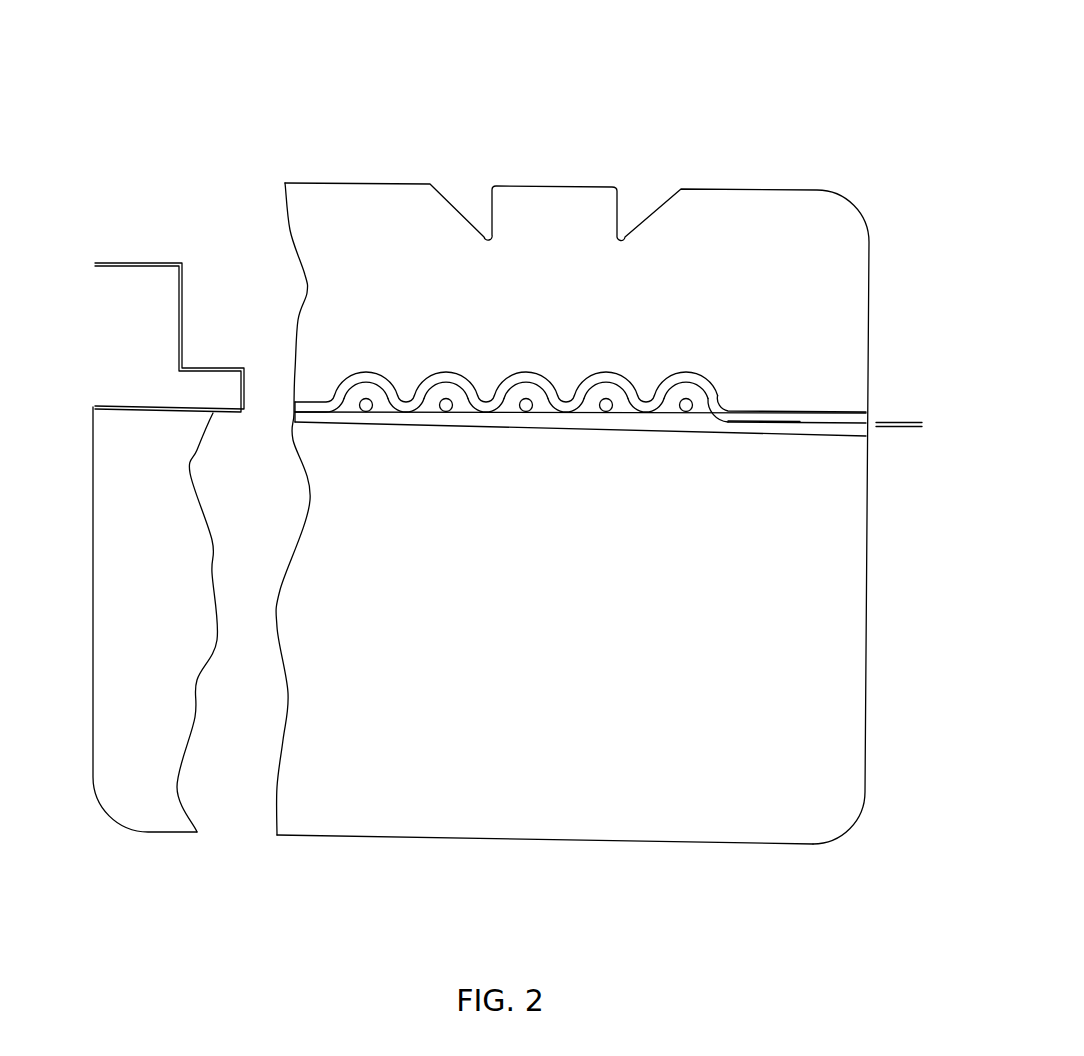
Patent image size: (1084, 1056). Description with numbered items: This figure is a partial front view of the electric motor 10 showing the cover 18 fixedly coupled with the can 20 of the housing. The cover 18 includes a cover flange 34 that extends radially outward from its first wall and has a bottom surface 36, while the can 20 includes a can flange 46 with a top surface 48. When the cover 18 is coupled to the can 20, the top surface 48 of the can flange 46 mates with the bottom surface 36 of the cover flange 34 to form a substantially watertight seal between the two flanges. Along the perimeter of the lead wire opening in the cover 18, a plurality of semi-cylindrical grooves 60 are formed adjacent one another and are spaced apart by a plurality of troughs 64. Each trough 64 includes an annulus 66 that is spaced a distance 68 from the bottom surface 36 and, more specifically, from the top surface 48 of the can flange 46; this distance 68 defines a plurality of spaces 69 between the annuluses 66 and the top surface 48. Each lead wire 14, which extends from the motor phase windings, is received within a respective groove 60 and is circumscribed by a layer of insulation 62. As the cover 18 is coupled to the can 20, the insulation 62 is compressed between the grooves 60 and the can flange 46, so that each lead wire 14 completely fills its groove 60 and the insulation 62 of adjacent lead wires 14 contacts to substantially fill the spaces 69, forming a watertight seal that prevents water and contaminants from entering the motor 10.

The electric motor 10 is at (683, 68).
The lead wire 14 is at (364, 409).
The cover 18 is at (795, 217).
The can 20 is at (768, 813).
The cover flange 34 is at (299, 404).
The bottom surface 36 is at (297, 426).
The can flange 46 is at (327, 420).
The top surface 48 is at (760, 421).
The groove 60 is at (353, 380).
The insulation 62 is at (379, 408).
The trough 64 is at (399, 361).
The annulus 66 is at (406, 393).
The distance 68 is at (908, 455).
The space 69 is at (419, 415).